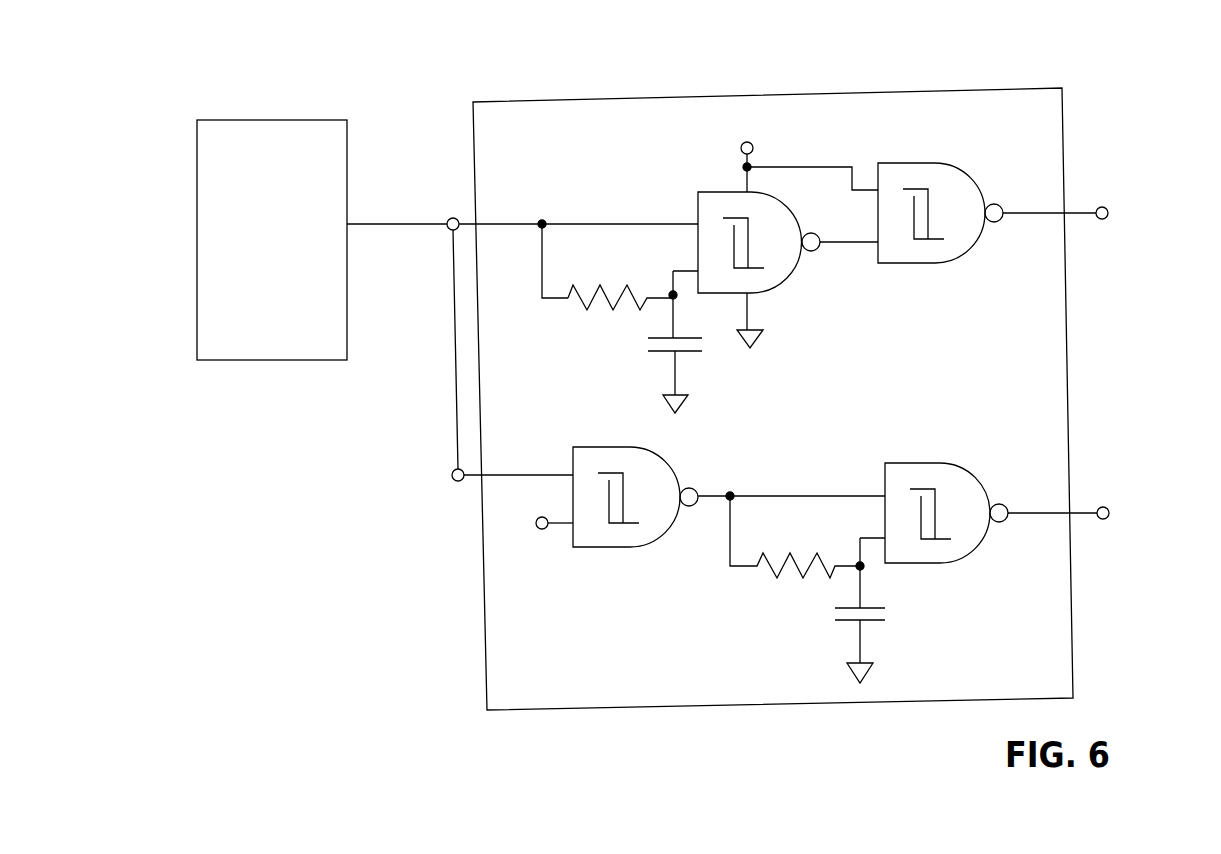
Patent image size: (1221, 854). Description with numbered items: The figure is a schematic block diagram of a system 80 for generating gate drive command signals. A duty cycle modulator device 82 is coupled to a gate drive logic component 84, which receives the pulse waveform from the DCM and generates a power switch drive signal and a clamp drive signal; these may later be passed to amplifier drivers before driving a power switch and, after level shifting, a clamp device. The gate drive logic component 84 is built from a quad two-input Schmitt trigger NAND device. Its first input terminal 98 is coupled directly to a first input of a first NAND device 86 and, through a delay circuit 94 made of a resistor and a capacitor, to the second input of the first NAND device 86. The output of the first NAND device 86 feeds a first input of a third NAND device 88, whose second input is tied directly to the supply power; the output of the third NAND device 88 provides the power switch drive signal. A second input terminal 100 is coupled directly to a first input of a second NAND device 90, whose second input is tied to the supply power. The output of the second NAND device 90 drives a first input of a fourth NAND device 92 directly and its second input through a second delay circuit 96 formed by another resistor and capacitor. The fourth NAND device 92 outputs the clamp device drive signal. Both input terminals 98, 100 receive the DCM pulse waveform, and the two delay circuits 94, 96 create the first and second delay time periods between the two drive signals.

The system for generating gate drive command signals 80 is at (1086, 56).
The duty cycle modulator device 82 is at (290, 120).
The gate drive logic component 84 is at (852, 92).
The first NAND device 86 is at (715, 192).
The third NAND device 88 is at (920, 163).
The second NAND device 90 is at (652, 447).
The fourth NAND device 92 is at (923, 463).
The delay circuit 94 is at (722, 360).
The second delay circuit 96 is at (803, 602).
The first input terminal 98 is at (443, 232).
The second input terminal 100 is at (436, 480).